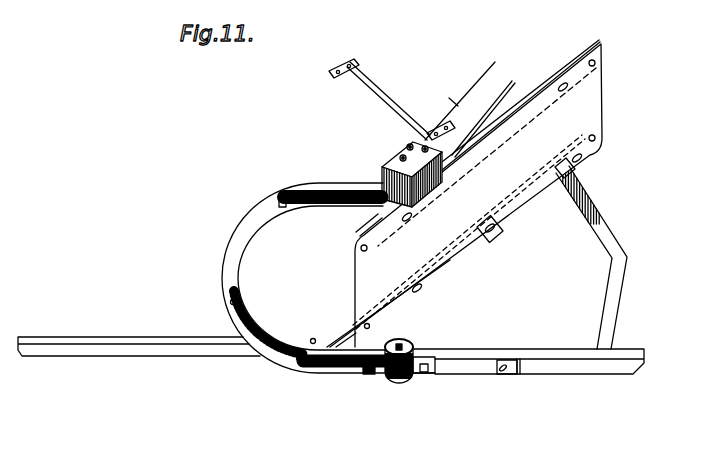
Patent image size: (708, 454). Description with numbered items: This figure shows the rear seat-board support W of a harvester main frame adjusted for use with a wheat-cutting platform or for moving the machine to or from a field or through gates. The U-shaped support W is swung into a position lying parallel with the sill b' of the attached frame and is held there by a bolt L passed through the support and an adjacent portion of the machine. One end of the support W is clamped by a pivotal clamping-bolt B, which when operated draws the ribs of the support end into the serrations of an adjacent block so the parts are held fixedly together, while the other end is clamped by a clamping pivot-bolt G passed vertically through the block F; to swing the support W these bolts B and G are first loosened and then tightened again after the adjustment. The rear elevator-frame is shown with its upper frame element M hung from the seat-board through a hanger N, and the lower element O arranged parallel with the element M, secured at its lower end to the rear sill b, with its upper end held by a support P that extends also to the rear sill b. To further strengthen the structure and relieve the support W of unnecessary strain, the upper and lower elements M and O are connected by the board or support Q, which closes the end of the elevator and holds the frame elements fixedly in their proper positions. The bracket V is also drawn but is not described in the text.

The upper frame element M is at (570, 62).
The support Q is at (604, 91).
The bracket V is at (412, 99).
The pivotal clamping-bolt B is at (393, 159).
The hanger N is at (440, 162).
The rear U-shaped support W is at (232, 273).
The lower element O is at (347, 331).
The clamping pivot-bolt G is at (407, 343).
The bolt L is at (300, 362).
The block F is at (398, 384).
The sill b' is at (139, 337).
The rear sill b is at (528, 349).
The support P is at (587, 196).